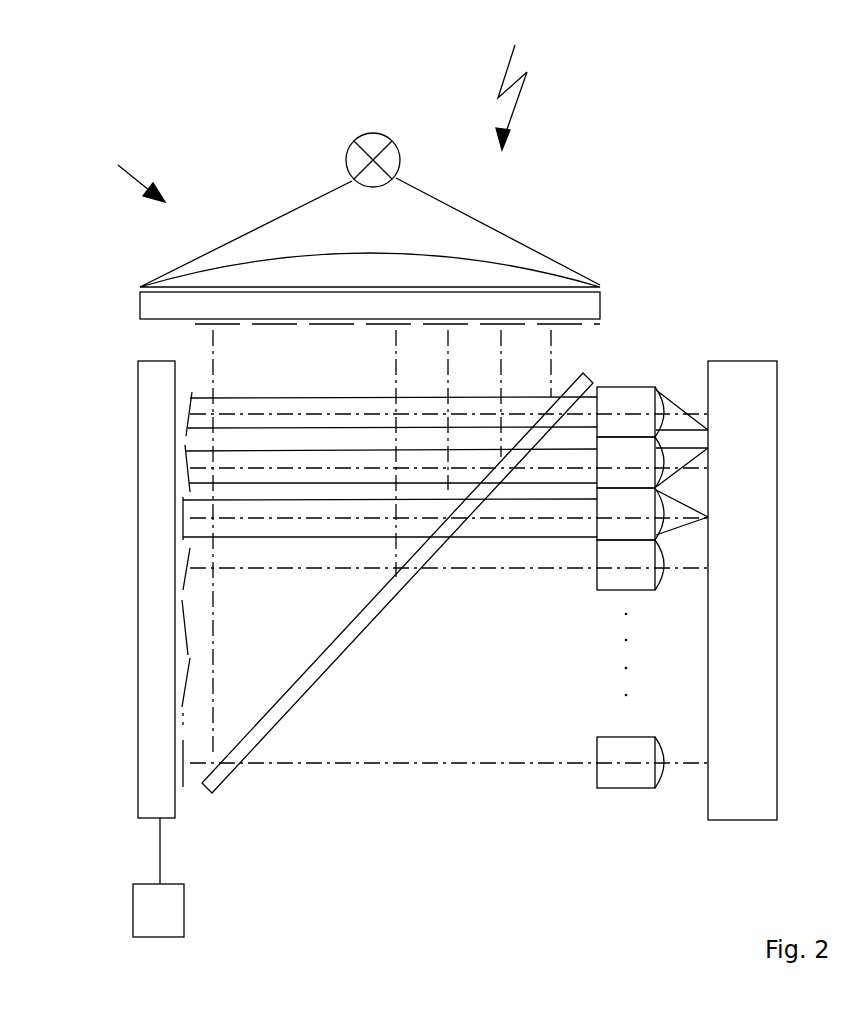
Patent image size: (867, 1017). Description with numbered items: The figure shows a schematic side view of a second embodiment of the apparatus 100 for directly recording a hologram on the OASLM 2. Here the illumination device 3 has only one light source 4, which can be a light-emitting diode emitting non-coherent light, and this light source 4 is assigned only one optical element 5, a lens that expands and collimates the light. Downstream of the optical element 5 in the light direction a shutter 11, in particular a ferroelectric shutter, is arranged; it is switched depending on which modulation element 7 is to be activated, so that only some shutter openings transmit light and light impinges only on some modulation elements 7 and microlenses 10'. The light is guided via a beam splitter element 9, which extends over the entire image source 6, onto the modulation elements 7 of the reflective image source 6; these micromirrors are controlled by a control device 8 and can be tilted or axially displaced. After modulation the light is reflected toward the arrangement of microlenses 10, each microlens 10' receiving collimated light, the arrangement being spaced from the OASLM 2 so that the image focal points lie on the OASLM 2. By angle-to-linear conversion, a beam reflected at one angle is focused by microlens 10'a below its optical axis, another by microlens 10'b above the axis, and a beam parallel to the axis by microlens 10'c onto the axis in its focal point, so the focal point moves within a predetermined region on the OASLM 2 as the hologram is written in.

The apparatus 100 is at (523, 76).
The illumination device 3 is at (127, 170).
The light source 4 is at (353, 162).
The optical element 5 is at (230, 275).
The shutter 11 is at (165, 307).
The modulation elements 7 is at (190, 410).
The image source 6 is at (155, 744).
The control device 8 is at (158, 877).
The beam splitter element 9 is at (585, 383).
The OASLM 2 is at (745, 388).
The microlens 10'a is at (652, 412).
The microlens 10'b is at (652, 462).
The microlens 10'c is at (652, 514).
The arrangement of microlenses 10 is at (630, 734).
The microlens 10' is at (658, 827).